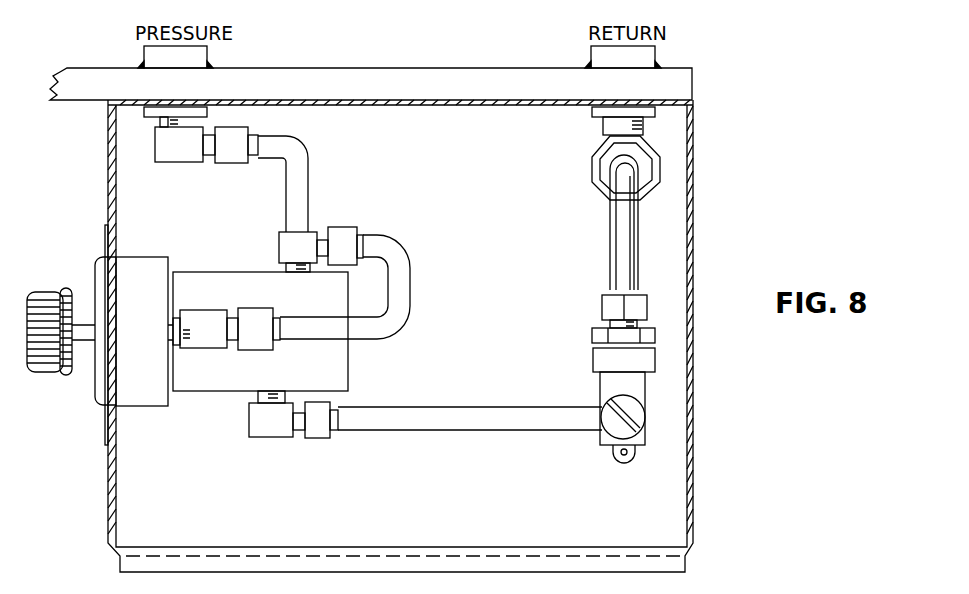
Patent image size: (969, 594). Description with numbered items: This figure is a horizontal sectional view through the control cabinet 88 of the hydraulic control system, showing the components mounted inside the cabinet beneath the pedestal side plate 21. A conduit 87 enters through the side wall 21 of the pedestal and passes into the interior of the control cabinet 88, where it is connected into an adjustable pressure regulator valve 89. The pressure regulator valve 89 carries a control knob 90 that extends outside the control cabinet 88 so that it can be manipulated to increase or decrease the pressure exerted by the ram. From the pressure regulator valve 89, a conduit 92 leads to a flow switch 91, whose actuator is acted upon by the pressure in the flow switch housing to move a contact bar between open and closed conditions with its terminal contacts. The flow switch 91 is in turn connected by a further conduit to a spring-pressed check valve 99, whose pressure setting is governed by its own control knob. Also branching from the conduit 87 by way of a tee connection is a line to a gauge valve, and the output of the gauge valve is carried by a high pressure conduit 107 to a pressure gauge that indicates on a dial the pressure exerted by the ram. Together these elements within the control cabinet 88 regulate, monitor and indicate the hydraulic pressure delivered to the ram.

The side plate 21 is at (388, 80).
The conduit 87 is at (290, 160).
The control cabinet 88 is at (695, 210).
The adjustable pressure regulator valve 89 is at (218, 285).
The control knob 90 is at (45, 302).
The flow switch 91 is at (610, 385).
The conduit 92 is at (441, 415).
The spring-pressed check valve 99 is at (597, 155).
The high pressure conduit 107 is at (398, 280).